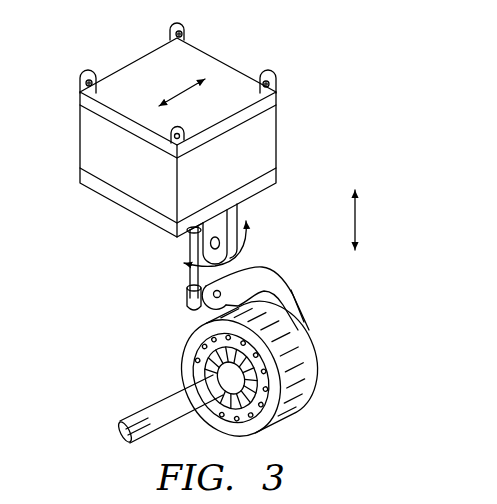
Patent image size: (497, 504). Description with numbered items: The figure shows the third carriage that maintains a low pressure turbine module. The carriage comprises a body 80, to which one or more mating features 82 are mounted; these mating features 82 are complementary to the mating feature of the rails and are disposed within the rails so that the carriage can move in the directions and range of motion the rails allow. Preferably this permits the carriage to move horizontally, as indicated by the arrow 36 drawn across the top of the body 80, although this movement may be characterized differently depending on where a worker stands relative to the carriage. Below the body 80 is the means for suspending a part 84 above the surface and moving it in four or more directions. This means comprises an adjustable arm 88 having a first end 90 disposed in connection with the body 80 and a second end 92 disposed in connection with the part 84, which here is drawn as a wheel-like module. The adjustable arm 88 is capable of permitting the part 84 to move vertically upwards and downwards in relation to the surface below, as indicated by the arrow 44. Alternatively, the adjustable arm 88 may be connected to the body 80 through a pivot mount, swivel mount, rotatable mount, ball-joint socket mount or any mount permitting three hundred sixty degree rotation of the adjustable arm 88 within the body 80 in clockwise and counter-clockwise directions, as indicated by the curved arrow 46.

The arrow 36 is at (167, 97).
The arrow 44 is at (356, 222).
The arrow 46 is at (249, 230).
The body 80 is at (80, 146).
The mating features 82 is at (91, 79).
The part 84 is at (314, 378).
The adjustable arm 88 is at (232, 263).
The first end 90 is at (189, 250).
The second end 92 is at (188, 293).